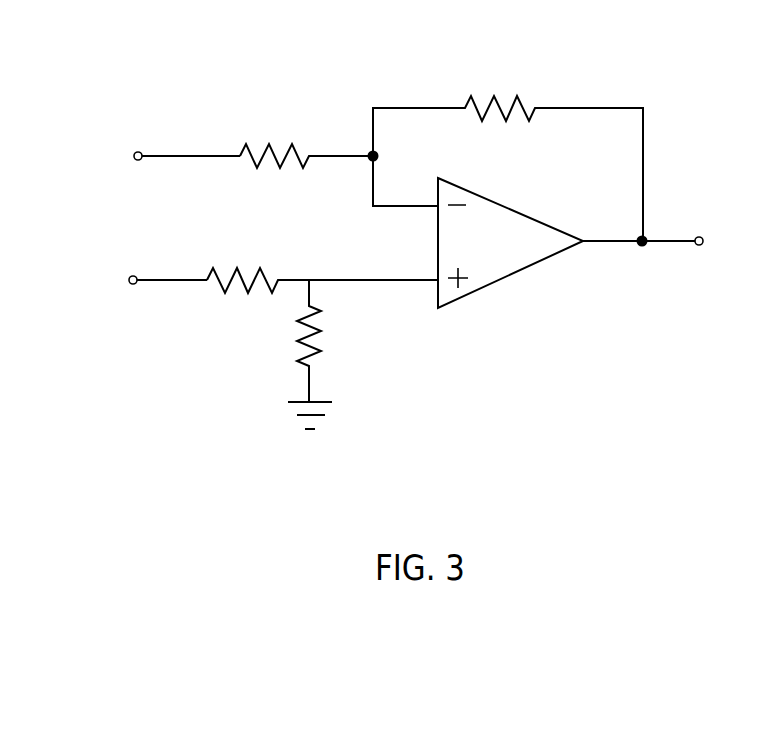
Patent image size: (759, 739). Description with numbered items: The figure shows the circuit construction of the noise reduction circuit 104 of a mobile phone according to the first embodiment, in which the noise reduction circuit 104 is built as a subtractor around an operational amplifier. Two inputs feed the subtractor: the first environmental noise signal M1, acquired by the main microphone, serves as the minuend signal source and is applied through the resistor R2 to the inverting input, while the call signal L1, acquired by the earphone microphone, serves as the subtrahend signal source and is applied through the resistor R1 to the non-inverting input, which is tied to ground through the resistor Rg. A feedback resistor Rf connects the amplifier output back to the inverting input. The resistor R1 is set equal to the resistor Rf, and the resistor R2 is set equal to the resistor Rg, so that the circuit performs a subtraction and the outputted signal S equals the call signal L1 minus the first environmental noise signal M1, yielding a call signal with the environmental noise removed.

The noise reduction circuit 104 is at (752, 24).
The first environmental noise signal M1 is at (155, 162).
The call signal L1 is at (141, 286).
The resistor R1 is at (322, 262).
The resistor R2 is at (306, 139).
The resistor Rf is at (508, 148).
The resistor Rg is at (336, 354).
The outputted signal S is at (664, 246).